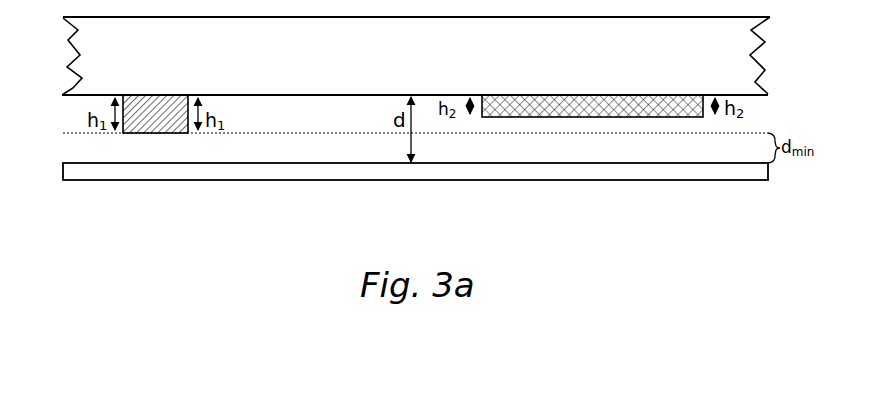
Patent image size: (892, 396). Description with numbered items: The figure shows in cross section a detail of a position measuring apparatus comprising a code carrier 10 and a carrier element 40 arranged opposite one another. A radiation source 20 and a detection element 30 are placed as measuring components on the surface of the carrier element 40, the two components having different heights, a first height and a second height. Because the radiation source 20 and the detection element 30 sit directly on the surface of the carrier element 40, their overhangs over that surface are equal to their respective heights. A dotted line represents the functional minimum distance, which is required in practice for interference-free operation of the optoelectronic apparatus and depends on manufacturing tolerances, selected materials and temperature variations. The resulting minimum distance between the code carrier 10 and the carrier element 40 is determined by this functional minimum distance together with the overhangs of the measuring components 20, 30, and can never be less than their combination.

The code carrier 10 is at (687, 172).
The radiation source 20 is at (170, 123).
The detection element 30 is at (647, 107).
The carrier element 40 is at (268, 65).